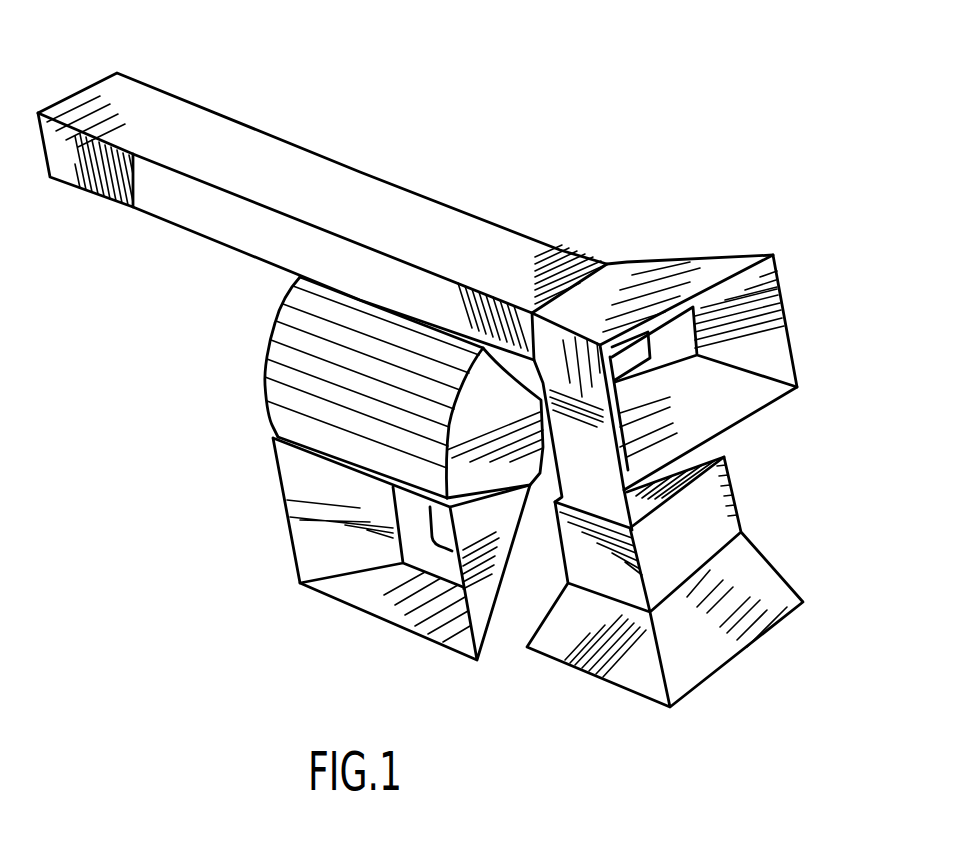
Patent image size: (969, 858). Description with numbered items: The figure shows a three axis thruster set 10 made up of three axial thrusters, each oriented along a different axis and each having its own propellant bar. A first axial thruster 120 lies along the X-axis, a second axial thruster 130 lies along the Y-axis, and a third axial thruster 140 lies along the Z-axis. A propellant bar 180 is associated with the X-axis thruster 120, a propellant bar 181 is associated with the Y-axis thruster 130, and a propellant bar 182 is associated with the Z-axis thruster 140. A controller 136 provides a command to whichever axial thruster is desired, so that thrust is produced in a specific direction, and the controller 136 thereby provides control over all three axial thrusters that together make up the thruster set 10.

The three axis thruster set 10 is at (588, 127).
The propellant bar 180 is at (343, 150).
The first axial thruster 120 is at (793, 250).
The propellant bar 181 is at (527, 570).
The propellant bar 182 is at (720, 445).
The controller 136 is at (265, 364).
The second axial thruster 130 is at (278, 527).
The third axial thruster 140 is at (744, 525).